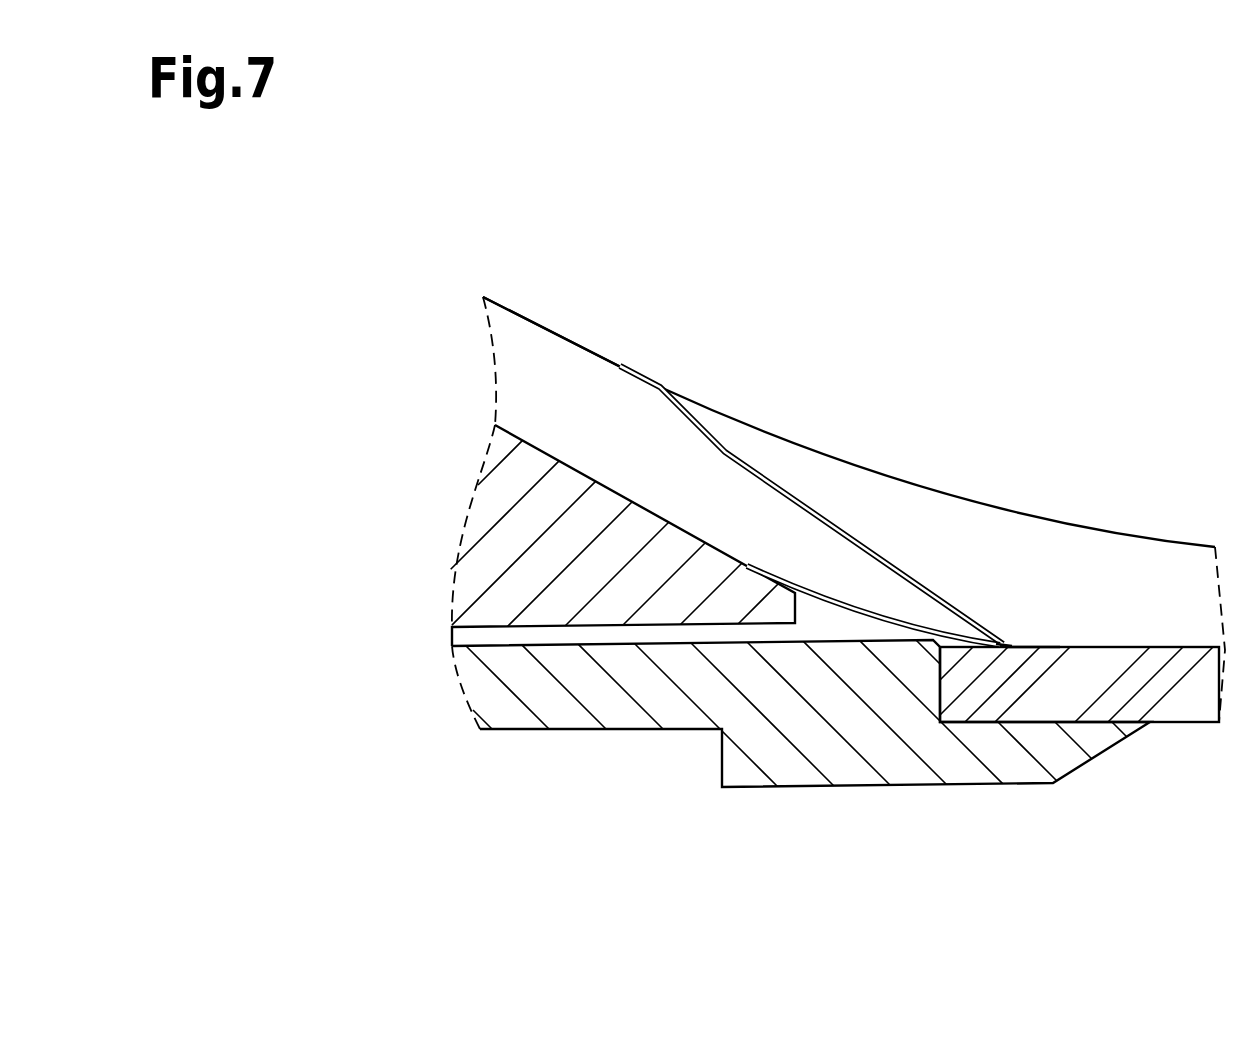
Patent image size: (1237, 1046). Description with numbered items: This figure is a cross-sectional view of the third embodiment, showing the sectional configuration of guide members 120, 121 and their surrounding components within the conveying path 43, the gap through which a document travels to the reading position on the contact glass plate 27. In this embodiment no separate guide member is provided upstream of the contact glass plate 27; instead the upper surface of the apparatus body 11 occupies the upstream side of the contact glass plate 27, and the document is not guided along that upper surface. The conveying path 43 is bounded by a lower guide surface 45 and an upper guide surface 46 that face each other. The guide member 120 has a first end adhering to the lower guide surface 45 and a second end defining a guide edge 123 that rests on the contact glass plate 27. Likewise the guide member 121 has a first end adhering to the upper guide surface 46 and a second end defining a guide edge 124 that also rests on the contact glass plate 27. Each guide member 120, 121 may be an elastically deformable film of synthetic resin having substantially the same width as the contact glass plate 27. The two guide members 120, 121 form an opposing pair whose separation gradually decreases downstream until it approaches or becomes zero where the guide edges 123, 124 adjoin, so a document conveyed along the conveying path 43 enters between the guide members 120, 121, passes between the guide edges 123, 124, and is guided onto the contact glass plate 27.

The conveying path 43 is at (854, 468).
The upper guide surface 46 is at (580, 352).
The lower guide surface 45 is at (587, 476).
The guide member 121 is at (757, 473).
The guide member 120 is at (826, 596).
The guide edge 124 is at (1010, 645).
The guide edge 123 is at (1030, 645).
The contact glass plate 27 is at (1170, 645).
The apparatus body 11 is at (613, 820).